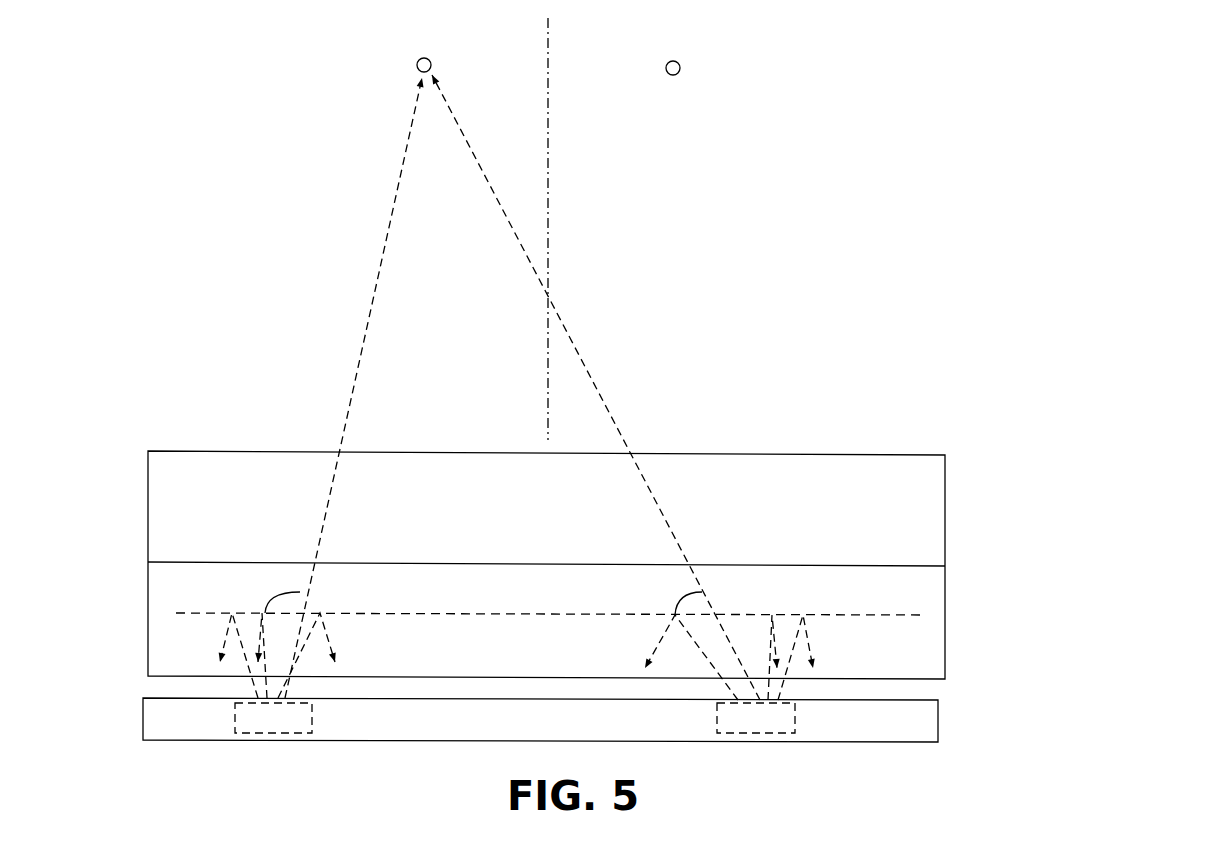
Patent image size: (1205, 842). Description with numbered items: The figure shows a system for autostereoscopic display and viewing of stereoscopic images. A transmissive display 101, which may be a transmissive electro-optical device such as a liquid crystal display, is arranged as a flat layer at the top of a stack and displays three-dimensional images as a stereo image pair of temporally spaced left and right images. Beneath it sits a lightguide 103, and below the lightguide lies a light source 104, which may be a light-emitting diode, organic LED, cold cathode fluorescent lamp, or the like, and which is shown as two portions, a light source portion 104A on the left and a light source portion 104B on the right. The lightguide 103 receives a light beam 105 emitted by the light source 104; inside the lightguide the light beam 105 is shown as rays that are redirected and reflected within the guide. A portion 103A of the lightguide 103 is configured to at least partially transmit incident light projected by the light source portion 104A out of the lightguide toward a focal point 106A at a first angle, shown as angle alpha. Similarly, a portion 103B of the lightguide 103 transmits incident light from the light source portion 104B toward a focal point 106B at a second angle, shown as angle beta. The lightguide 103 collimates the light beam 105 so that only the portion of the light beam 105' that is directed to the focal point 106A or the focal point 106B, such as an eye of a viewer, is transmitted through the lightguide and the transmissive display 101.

The transmissive display 101 is at (895, 470).
The lightguide 103 is at (923, 645).
The portion of the lightguide 103A is at (325, 587).
The portion of the lightguide 103B is at (727, 590).
The light source 104 is at (540, 720).
The portion of light source 104A is at (273, 718).
The portion of light source 104B is at (756, 718).
The light beam 105 is at (564, 619).
The portion of the light beam 105' is at (510, 387).
The focal point 106A is at (425, 49).
The focal point 106B is at (670, 54).